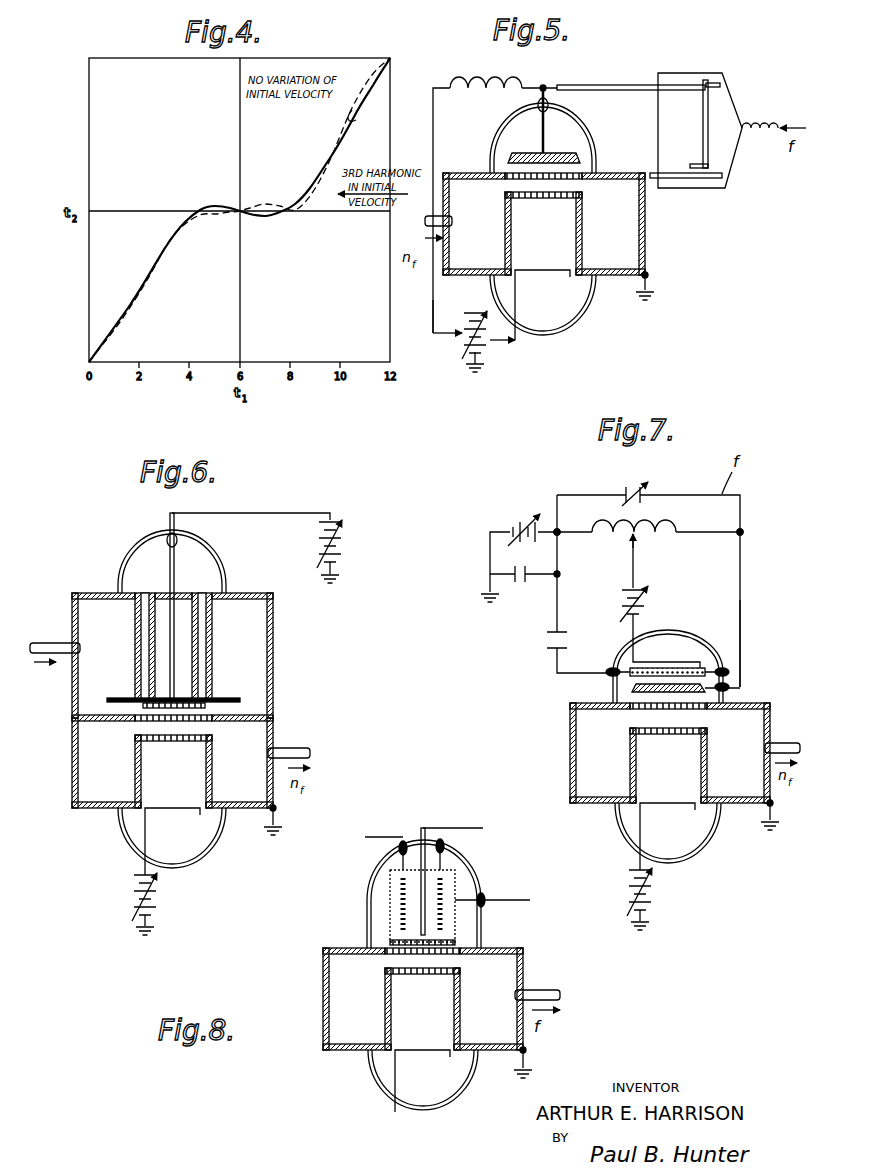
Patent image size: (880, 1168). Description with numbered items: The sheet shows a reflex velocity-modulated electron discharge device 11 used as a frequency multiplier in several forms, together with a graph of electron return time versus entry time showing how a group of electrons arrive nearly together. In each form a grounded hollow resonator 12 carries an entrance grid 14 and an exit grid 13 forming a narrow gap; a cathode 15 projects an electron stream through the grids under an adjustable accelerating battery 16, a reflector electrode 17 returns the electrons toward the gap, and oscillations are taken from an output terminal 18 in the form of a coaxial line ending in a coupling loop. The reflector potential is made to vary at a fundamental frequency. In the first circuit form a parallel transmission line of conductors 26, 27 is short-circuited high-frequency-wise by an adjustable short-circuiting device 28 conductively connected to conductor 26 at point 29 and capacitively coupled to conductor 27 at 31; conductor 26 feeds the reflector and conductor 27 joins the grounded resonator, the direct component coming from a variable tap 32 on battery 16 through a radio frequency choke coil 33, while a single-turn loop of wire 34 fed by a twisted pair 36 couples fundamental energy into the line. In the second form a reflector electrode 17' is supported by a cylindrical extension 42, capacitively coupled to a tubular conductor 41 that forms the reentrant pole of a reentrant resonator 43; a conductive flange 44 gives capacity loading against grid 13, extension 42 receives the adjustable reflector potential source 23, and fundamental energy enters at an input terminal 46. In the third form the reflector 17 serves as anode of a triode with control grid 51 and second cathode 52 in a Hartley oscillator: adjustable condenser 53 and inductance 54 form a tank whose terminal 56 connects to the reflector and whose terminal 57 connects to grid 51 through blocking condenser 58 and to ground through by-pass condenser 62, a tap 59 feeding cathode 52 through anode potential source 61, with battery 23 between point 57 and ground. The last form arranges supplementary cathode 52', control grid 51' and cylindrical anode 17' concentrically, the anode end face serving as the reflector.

In FIG. 7, the electron discharge device 11 is at (744, 668).
In FIG. 5, the hollow resonator 12 is at (641, 228).
In FIG. 6, the hollow resonator 12 is at (80, 762).
In FIG. 7, the hollow resonator 12 is at (584, 754).
In FIG. 8, the hollow resonator 12 is at (340, 980).
In FIG. 5, the exit grid 13 is at (578, 176).
In FIG. 6, the exit grid 13 is at (182, 721).
In FIG. 7, the exit grid 13 is at (660, 710).
In FIG. 8, the exit grid 13 is at (442, 954).
In FIG. 5, the entrance grid 14 is at (530, 198).
In FIG. 6, the entrance grid 14 is at (155, 741).
In FIG. 7, the entrance grid 14 is at (666, 735).
In FIG. 8, the entrance grid 14 is at (426, 974).
In FIG. 5, the cathode 15 is at (544, 270).
In FIG. 6, the cathode 15 is at (196, 808).
In FIG. 7, the cathode 15 is at (692, 804).
In FIG. 8, the cathode 15 is at (442, 1050).
In FIG. 5, the accelerating battery 16 is at (494, 352).
In FIG. 6, the accelerating battery 16 is at (158, 892).
In FIG. 7, the accelerating battery 16 is at (654, 880).
In FIG. 5, the reflector electrode 17 is at (562, 125).
In FIG. 7, the reflector electrode 17 is at (656, 690).
In FIG. 8, the reflector electrode 17 is at (392, 935).
In FIG. 6, the reflector electrode 17' is at (174, 684).
In FIG. 8, the reflector electrode 17' is at (391, 906).
In FIG. 5, the output terminal 18 is at (428, 220).
In FIG. 6, the output terminal 18 is at (290, 748).
In FIG. 7, the output terminal 18 is at (780, 744).
In FIG. 8, the output terminal 18 is at (546, 990).
In FIG. 6, the reflector voltage battery 23 is at (318, 540).
In FIG. 7, the reflector voltage battery 23 is at (518, 520).
In FIG. 5, the conductor 26 is at (582, 87).
In FIG. 5, the conductor 27 is at (670, 173).
In FIG. 5, the short-circuiting device 28 is at (703, 111).
In FIG. 5, the connection point 29 is at (714, 84).
In FIG. 5, the capacitive coupling 31 is at (704, 166).
In FIG. 5, the variable tap 32 is at (434, 338).
In FIG. 5, the radio frequency choke coil 33 is at (492, 88).
In FIG. 5, the single-turn loop of wire 34 is at (674, 73).
In FIG. 5, the twisted pair 36 is at (770, 134).
In FIG. 6, the tubular conductor 41 is at (135, 634).
In FIG. 6, the cylindrical extension 42 is at (148, 600).
In FIG. 6, the reentrant resonator 43 is at (84, 612).
In FIG. 6, the conductive plate or flange 44 is at (240, 700).
In FIG. 6, the input terminal 46 is at (62, 648).
In FIG. 7, the control grid 51 is at (671, 647).
In FIG. 8, the control grid 51' is at (466, 871).
In FIG. 7, the second cathode 52 is at (667, 641).
In FIG. 8, the supplementary cathode 52' is at (466, 881).
In FIG. 7, the adjustable condenser 53 is at (634, 486).
In FIG. 7, the inductance 54 is at (612, 522).
In FIG. 7, the tank circuit terminal 56 is at (742, 532).
In FIG. 7, the tank circuit terminal 57 is at (559, 534).
In FIG. 7, the blocking condenser 58 is at (548, 638).
In FIG. 7, the tap 59 is at (632, 542).
In FIG. 7, the anode potential source 61 is at (620, 606).
In FIG. 7, the by-pass condenser 62 is at (520, 582).